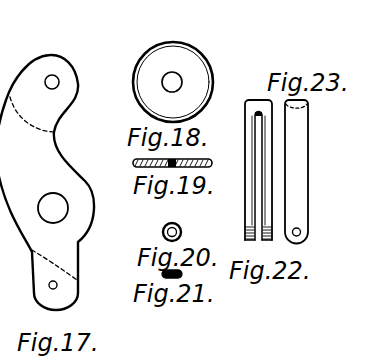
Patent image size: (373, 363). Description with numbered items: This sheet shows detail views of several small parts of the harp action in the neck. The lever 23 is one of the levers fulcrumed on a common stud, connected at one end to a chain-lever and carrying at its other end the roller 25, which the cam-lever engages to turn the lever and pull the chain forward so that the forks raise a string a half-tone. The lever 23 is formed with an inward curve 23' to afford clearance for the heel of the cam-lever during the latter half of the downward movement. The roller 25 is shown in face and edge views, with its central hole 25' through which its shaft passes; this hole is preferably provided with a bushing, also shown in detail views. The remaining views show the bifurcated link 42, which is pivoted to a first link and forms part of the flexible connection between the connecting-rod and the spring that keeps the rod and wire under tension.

In FIG. 17, the lever 23 is at (49, 182).
In FIG. 17, the inward curve 23' is at (85, 115).
In FIG. 18, the roller 25 is at (162, 69).
In FIG. 18, the central hole 25' is at (189, 48).
In FIG. 19, the central hole 25' is at (183, 155).
In FIG. 22, the bifurcated link 42 is at (241, 197).
In FIG. 23, the bifurcated link 42 is at (305, 157).